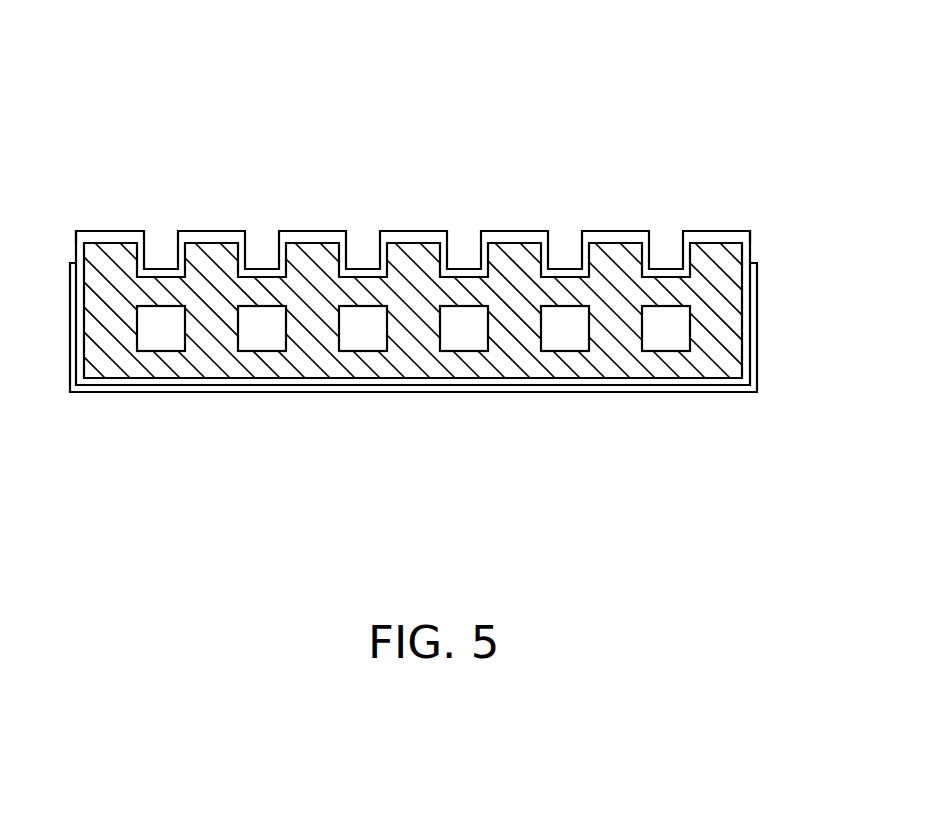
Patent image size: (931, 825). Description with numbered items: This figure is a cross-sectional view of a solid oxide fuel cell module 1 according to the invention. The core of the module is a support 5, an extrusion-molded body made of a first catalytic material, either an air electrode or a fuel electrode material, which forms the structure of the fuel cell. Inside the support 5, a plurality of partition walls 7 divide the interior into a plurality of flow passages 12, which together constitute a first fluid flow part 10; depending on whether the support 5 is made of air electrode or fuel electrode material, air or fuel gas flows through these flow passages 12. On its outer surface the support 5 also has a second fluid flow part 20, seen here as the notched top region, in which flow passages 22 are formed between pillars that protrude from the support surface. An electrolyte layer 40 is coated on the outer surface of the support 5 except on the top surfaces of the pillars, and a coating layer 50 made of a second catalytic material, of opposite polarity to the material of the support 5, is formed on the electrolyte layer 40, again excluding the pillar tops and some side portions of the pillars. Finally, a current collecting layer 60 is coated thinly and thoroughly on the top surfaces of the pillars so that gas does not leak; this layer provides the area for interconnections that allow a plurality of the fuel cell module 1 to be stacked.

The solid oxide fuel cell module 1 is at (427, 274).
The support 5 is at (725, 332).
The partition walls 7 is at (208, 332).
The first fluid flow part 10 is at (427, 383).
The flow passages 12 is at (358, 333).
The second fluid flow part 20 is at (708, 228).
The flow passages 22 is at (663, 255).
The electrolyte layer 40 is at (272, 272).
The coating layer 50 is at (167, 269).
The current collecting layer 60 is at (102, 231).